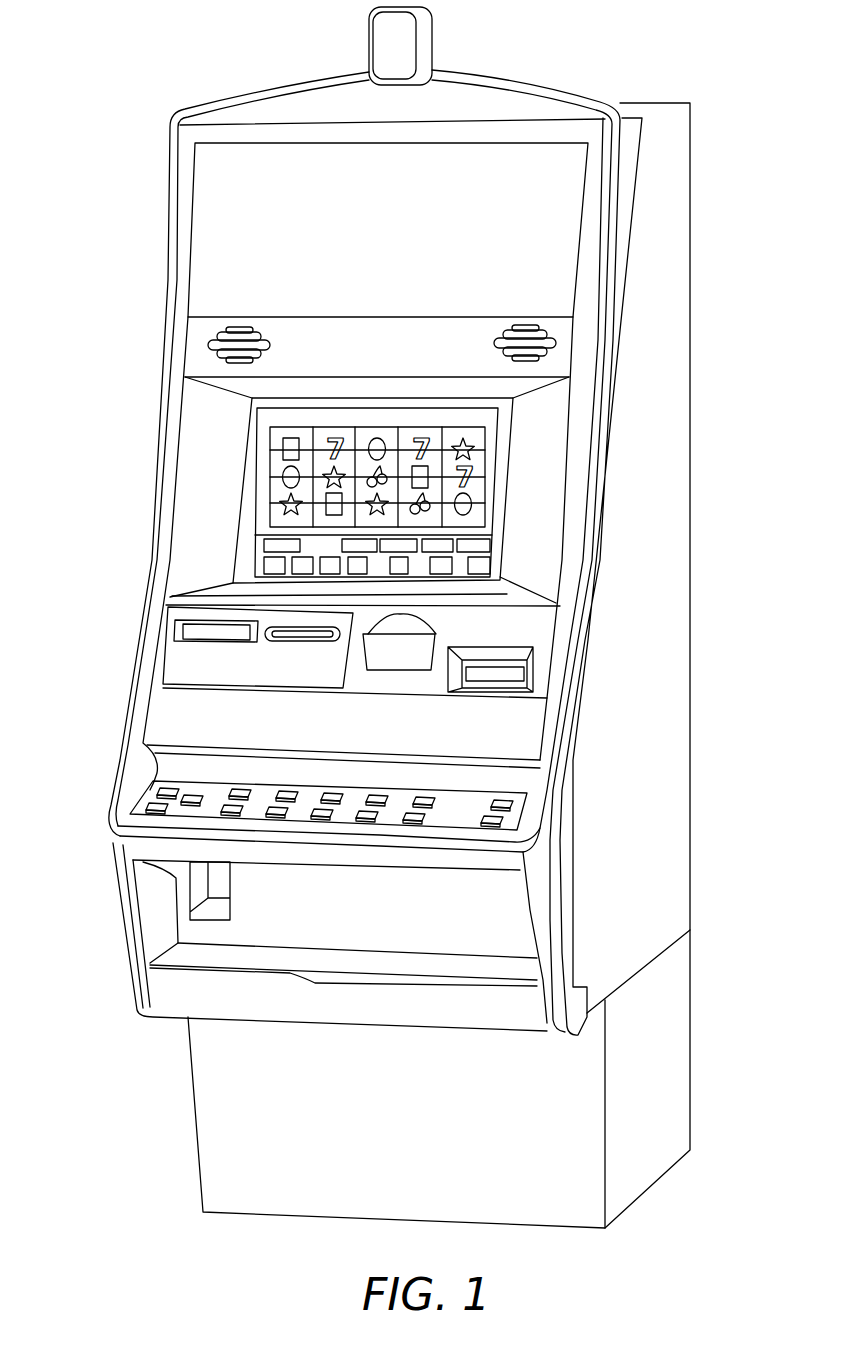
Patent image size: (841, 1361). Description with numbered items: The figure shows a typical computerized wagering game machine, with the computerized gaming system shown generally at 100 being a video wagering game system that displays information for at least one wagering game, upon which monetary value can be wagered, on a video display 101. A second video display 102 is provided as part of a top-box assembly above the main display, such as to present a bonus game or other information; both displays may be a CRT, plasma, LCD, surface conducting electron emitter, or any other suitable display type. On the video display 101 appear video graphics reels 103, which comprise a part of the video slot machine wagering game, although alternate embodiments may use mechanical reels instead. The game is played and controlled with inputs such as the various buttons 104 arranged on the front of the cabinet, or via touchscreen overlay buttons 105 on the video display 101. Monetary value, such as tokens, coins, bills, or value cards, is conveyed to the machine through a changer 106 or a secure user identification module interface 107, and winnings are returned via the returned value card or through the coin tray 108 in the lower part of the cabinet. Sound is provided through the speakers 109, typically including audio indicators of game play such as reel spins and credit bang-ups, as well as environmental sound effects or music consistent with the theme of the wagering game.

The computerized gaming system 100 is at (118, 48).
The video display 101 is at (250, 505).
The second video display 102 is at (215, 215).
The video graphics reels 103 is at (376, 436).
The buttons 104 is at (148, 795).
The touchscreen overlay buttons 105 is at (493, 553).
The changer 106 is at (510, 660).
The secure user identification module interface 107 is at (298, 637).
The coin tray 108 is at (176, 1010).
The speakers 109 is at (527, 343).